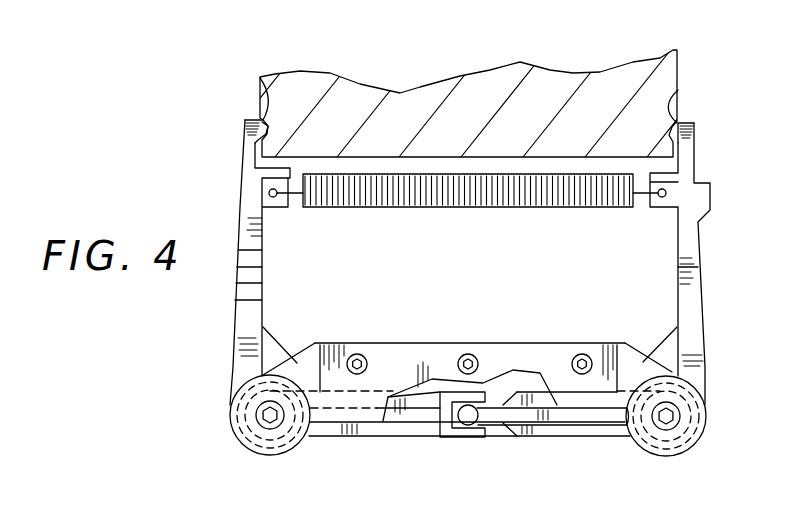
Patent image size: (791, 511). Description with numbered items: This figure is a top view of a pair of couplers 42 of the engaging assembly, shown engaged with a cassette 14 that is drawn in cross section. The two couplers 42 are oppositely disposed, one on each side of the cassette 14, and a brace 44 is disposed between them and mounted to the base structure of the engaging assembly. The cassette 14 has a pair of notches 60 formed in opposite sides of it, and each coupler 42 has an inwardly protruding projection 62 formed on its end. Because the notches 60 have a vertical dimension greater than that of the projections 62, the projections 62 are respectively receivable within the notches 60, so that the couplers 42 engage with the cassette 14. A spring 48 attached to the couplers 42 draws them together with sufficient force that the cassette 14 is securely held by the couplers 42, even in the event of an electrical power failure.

The cassette 14 is at (400, 117).
The couplers 42 is at (245, 317).
The brace 44 is at (505, 357).
The spring 48 is at (355, 207).
The notches 60 is at (263, 120).
The projection 62 is at (252, 130).